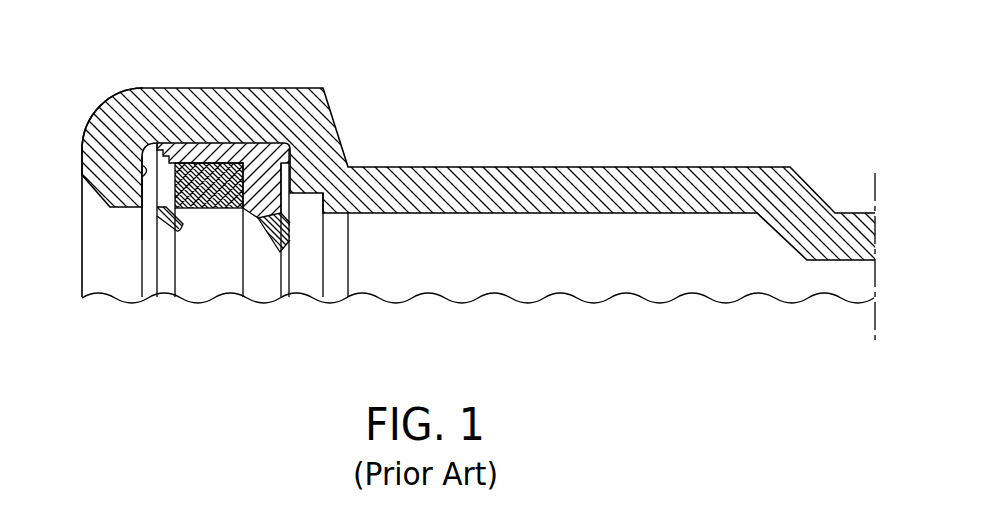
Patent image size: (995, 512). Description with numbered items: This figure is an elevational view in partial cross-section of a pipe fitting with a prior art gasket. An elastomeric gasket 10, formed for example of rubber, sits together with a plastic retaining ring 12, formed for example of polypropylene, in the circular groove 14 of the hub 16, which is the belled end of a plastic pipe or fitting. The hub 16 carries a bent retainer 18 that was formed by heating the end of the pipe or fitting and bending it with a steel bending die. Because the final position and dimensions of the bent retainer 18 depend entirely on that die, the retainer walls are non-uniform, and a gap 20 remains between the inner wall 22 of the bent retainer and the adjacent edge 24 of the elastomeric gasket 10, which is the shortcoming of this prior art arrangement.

The elastomeric gasket 10 is at (263, 225).
The plastic retaining ring 12 is at (215, 208).
The circular groove 14 is at (232, 142).
The hub 16 is at (295, 87).
The bent retainer 18 is at (100, 107).
The gap 20 is at (147, 143).
The inner wall 22 is at (142, 168).
The adjacent edge 24 is at (148, 165).